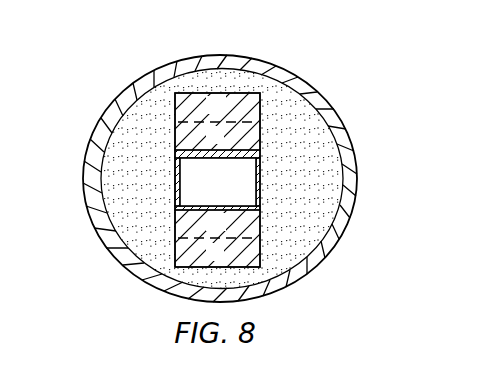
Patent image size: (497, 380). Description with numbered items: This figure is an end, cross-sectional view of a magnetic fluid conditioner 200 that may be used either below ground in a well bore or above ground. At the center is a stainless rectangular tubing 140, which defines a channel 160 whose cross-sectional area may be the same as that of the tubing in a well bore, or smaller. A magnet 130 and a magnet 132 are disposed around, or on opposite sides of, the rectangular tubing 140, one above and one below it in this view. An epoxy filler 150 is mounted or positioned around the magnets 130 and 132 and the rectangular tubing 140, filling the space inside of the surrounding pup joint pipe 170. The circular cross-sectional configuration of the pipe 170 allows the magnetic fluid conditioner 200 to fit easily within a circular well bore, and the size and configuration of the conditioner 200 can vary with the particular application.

The magnetic fluid conditioner 200 is at (295, 54).
The pup joint pipe 170 is at (343, 127).
The epoxy filler 150 is at (232, 73).
The rectangular tubing 140 is at (175, 190).
The magnet 132 is at (169, 122).
The magnet 130 is at (270, 238).
The channel 160 is at (258, 170).